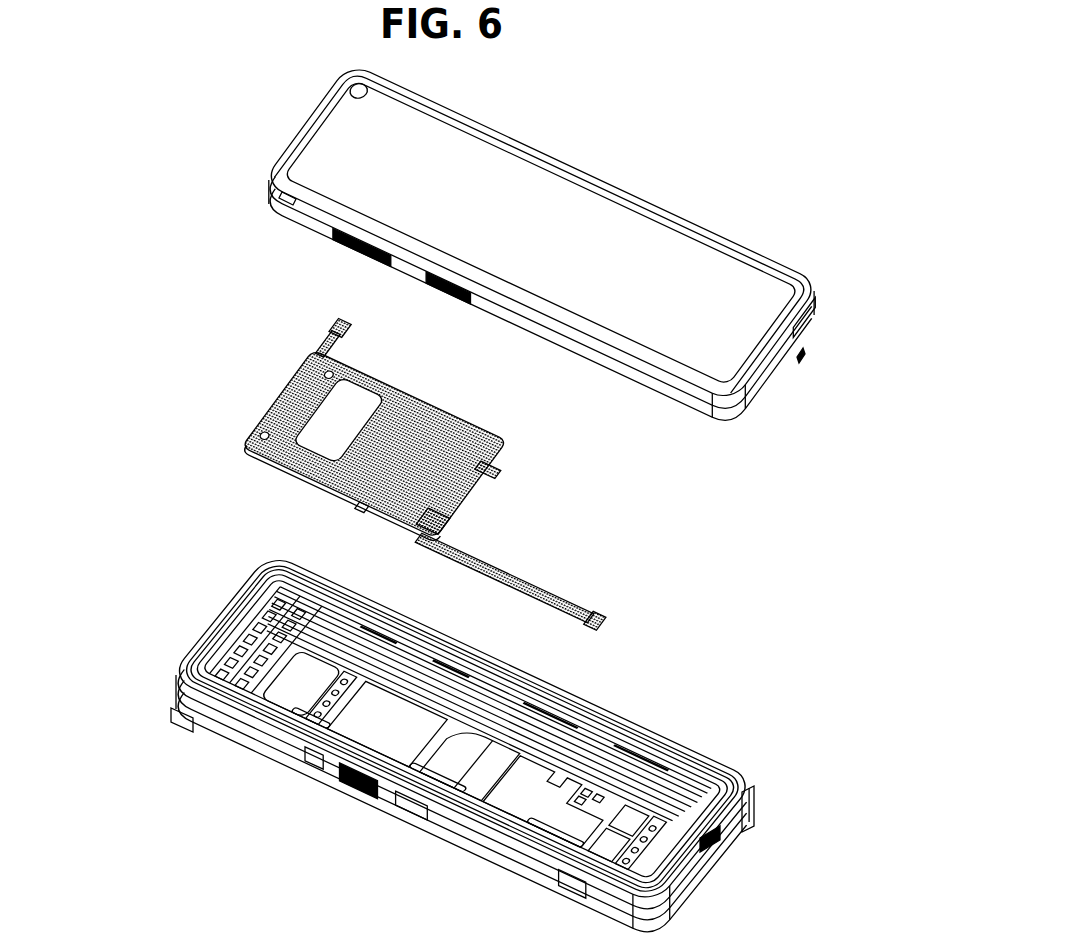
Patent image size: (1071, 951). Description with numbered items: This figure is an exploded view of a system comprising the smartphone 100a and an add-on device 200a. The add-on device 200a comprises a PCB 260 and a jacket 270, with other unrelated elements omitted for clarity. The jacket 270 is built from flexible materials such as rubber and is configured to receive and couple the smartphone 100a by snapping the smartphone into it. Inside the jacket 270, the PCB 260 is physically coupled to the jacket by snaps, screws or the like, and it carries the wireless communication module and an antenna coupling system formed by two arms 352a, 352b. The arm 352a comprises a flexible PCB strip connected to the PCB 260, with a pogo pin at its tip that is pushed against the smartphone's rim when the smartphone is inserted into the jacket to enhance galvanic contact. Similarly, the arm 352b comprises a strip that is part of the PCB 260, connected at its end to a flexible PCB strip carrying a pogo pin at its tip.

The smartphone 100a is at (265, 98).
The add-on device 200a is at (272, 492).
The PCB 260 is at (478, 518).
The jacket 270 is at (613, 700).
The arm 352a is at (318, 327).
The arm 352b is at (575, 588).